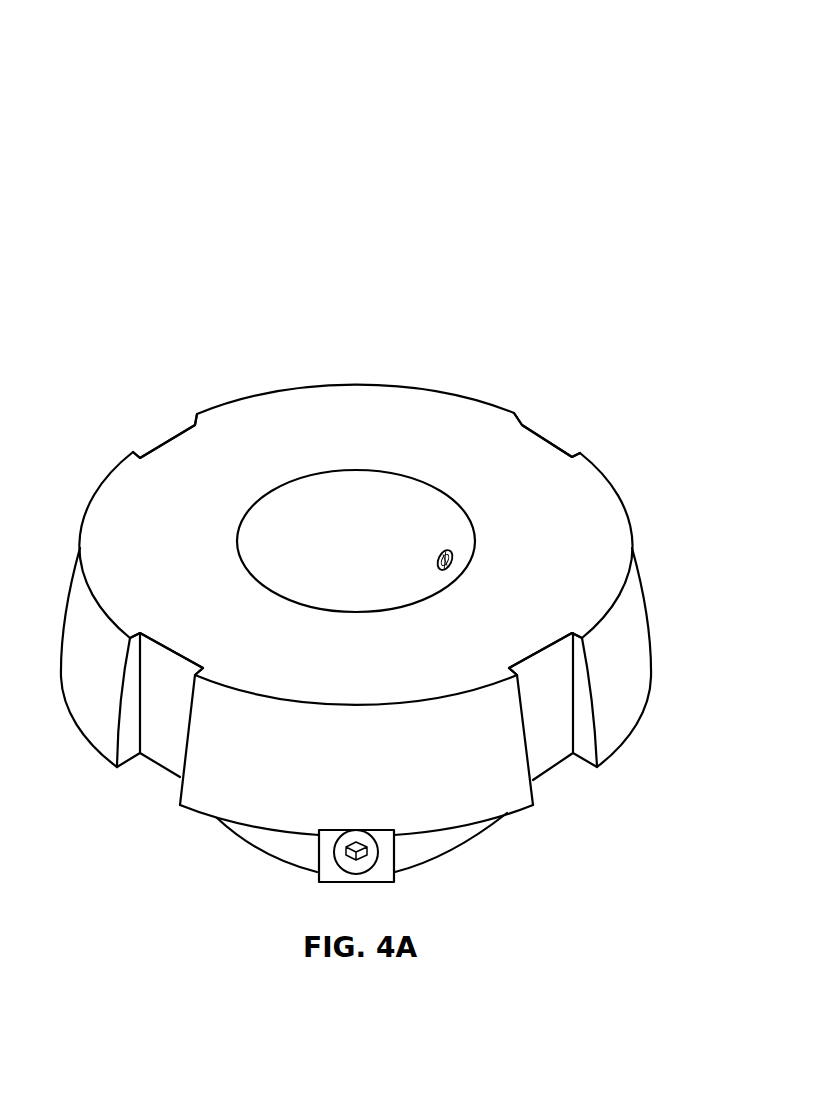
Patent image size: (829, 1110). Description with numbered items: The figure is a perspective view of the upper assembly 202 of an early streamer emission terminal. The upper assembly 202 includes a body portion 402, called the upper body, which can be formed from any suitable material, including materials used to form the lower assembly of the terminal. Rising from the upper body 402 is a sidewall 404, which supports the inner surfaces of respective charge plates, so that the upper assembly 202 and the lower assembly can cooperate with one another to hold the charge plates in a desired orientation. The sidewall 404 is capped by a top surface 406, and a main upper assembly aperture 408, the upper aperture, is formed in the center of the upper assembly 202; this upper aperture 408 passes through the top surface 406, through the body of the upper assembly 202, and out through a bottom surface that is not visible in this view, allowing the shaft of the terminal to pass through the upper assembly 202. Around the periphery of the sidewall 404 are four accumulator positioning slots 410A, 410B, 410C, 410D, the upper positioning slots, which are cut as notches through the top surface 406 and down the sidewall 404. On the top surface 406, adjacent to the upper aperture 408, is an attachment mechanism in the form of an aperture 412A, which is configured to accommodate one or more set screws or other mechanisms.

The upper assembly 202 is at (541, 163).
The body portion 402 is at (440, 842).
The sidewall 404 is at (637, 672).
The top surface 406 is at (602, 537).
The main upper assembly aperture 408 is at (472, 545).
The accumulator positioning slot 410A is at (565, 440).
The accumulator positioning slot 410B is at (172, 435).
The accumulator positioning slot 410C is at (165, 725).
The accumulator positioning slot 410D is at (547, 704).
The aperture 412A is at (447, 550).